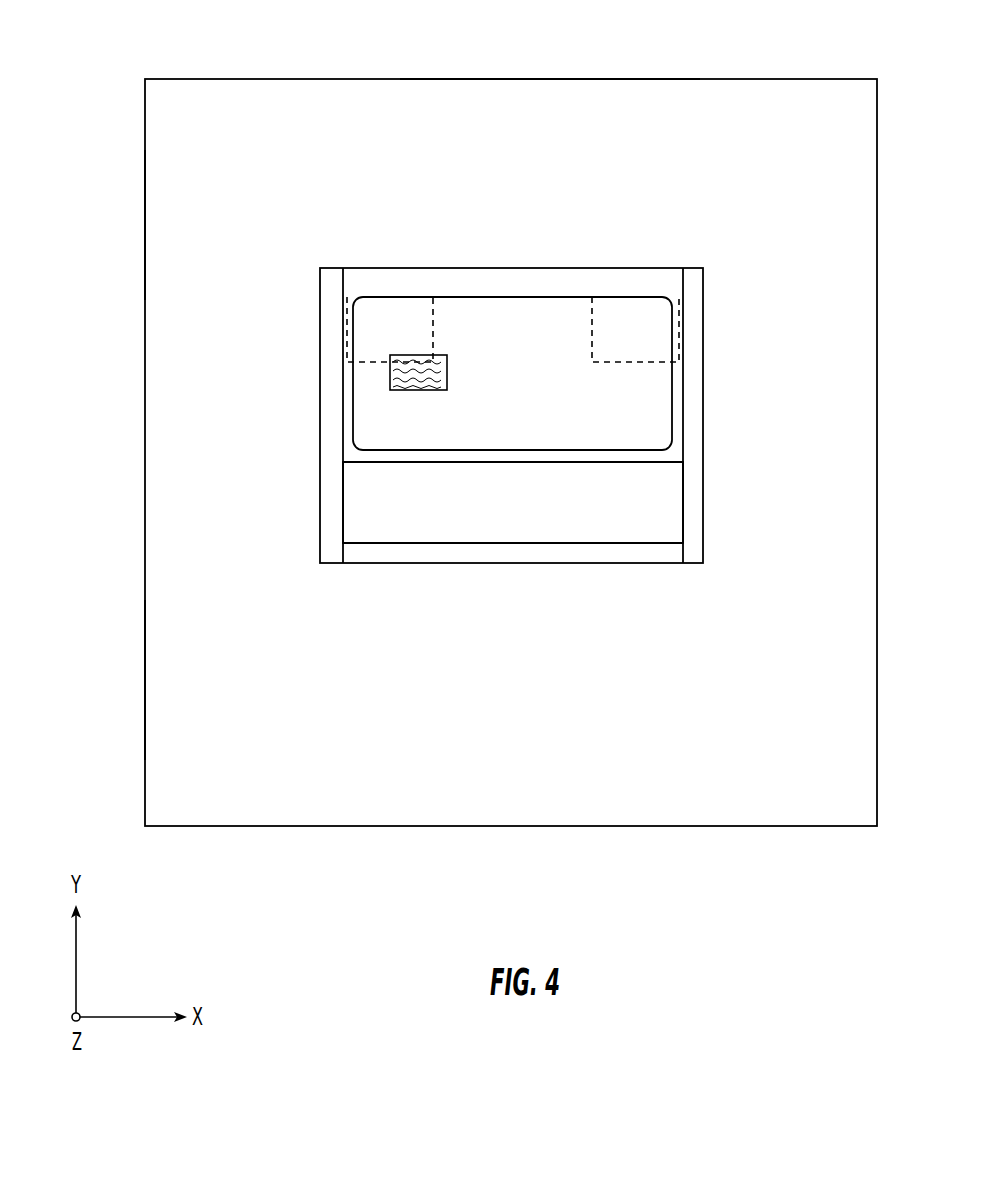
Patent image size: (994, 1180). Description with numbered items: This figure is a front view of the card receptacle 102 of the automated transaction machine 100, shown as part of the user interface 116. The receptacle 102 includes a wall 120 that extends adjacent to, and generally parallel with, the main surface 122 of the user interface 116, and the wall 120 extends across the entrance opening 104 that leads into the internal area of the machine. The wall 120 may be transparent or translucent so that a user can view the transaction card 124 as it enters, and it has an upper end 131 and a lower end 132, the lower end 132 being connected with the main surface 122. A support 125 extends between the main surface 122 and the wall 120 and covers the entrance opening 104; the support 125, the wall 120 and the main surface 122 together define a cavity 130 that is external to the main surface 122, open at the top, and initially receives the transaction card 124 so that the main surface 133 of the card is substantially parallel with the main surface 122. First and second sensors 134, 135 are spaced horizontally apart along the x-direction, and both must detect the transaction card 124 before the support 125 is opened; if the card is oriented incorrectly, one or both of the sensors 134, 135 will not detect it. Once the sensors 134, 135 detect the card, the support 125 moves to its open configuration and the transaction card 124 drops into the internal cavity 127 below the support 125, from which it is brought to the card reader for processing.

The automated transaction machine 100 is at (572, 79).
The card receptacle 102 is at (314, 200).
The entrance opening 104 is at (350, 473).
The user interface 116 is at (321, 822).
The wall 120 is at (328, 498).
The main surface 122 is at (255, 692).
The transaction card 124 is at (520, 297).
The support 125 is at (663, 458).
The internal cavity 127 is at (464, 542).
The cavity 130 is at (692, 403).
The upper end 131 is at (328, 287).
The lower end 132 is at (328, 552).
The main surface of the transaction card 133 is at (540, 377).
The first sensor 134 is at (383, 297).
The second sensor 135 is at (648, 297).